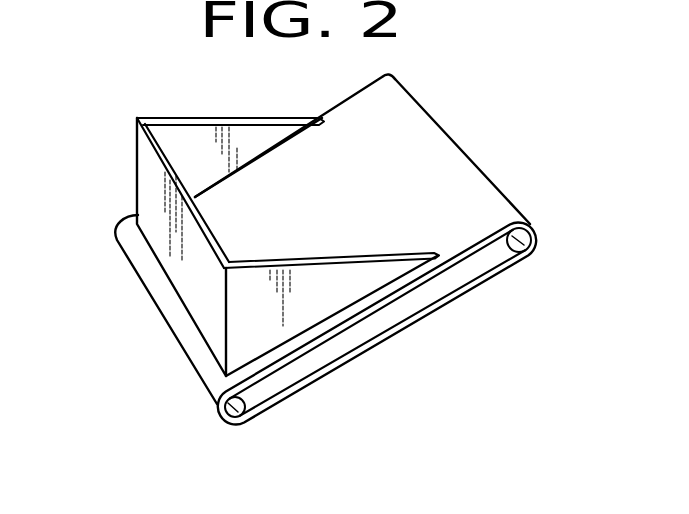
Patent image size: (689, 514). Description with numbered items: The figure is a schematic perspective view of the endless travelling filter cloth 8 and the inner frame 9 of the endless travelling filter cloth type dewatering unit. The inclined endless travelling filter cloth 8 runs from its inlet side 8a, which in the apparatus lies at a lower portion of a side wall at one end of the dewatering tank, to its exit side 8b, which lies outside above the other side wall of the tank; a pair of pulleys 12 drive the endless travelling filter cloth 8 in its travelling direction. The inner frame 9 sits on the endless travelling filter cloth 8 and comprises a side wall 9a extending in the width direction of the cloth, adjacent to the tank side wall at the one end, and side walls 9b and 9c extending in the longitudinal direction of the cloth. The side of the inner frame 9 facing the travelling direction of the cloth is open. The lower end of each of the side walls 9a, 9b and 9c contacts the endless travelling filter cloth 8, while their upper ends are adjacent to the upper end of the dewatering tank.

The endless travelling filter cloth 8 is at (448, 99).
The inlet side 8a is at (173, 336).
The exit side 8b is at (497, 177).
The inner frame 9 is at (107, 141).
The side wall 9a is at (157, 198).
The side wall 9b is at (227, 117).
The side wall 9c is at (327, 300).
The pair of pulleys 12 is at (240, 418).